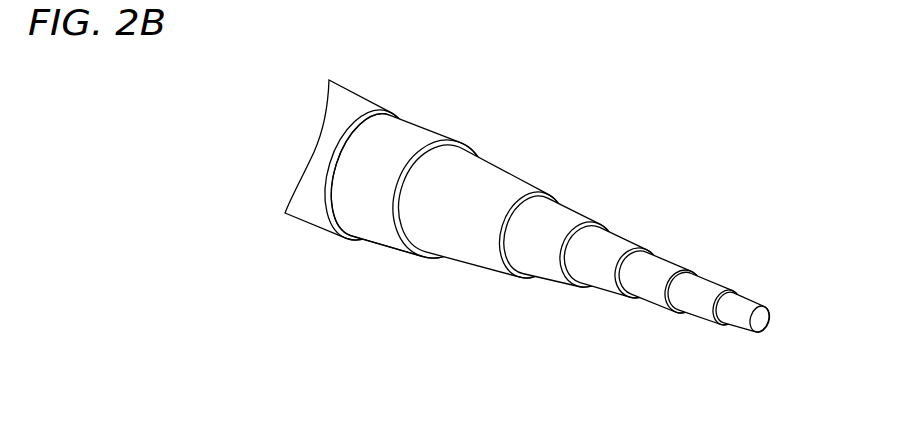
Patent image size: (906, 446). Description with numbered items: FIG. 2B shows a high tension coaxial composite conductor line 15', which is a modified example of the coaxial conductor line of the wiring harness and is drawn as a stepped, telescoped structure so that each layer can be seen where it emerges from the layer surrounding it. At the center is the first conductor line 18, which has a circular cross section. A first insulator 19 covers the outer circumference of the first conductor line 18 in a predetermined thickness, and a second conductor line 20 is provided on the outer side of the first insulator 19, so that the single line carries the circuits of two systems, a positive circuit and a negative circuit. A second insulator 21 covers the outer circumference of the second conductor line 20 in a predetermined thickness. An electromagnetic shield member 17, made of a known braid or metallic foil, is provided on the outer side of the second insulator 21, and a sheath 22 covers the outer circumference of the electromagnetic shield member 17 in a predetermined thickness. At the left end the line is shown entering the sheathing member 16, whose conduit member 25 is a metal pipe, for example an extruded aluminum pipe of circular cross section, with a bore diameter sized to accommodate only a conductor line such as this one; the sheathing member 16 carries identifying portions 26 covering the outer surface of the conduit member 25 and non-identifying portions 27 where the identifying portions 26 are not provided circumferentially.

The high tension coaxial composite conductor line 15' is at (556, 193).
The sheathing member 16 is at (398, 130).
The electromagnetic shield member 17 is at (552, 267).
The first conductor line 18 is at (740, 313).
The first insulator 19 is at (700, 303).
The second conductor line 20 is at (653, 295).
The second insulator 21 is at (597, 277).
The sheath 22 is at (463, 248).
The conduit member 25 is at (377, 227).
The identifying portions 26 is at (288, 205).
The non-identifying portions 27 is at (343, 200).